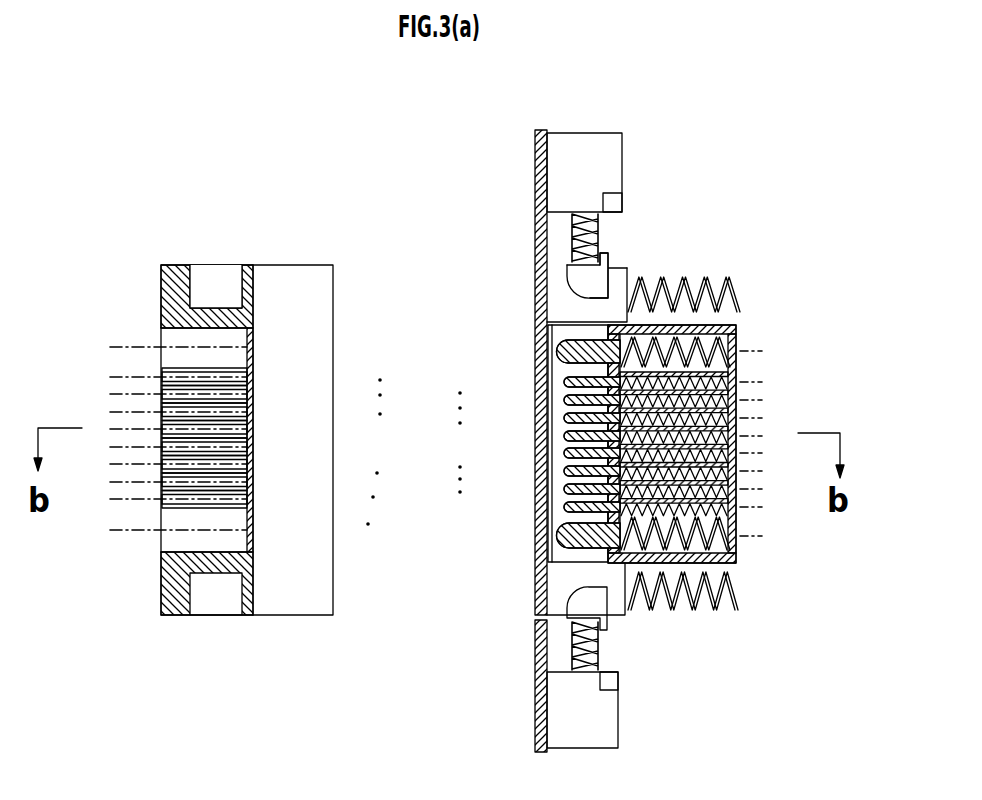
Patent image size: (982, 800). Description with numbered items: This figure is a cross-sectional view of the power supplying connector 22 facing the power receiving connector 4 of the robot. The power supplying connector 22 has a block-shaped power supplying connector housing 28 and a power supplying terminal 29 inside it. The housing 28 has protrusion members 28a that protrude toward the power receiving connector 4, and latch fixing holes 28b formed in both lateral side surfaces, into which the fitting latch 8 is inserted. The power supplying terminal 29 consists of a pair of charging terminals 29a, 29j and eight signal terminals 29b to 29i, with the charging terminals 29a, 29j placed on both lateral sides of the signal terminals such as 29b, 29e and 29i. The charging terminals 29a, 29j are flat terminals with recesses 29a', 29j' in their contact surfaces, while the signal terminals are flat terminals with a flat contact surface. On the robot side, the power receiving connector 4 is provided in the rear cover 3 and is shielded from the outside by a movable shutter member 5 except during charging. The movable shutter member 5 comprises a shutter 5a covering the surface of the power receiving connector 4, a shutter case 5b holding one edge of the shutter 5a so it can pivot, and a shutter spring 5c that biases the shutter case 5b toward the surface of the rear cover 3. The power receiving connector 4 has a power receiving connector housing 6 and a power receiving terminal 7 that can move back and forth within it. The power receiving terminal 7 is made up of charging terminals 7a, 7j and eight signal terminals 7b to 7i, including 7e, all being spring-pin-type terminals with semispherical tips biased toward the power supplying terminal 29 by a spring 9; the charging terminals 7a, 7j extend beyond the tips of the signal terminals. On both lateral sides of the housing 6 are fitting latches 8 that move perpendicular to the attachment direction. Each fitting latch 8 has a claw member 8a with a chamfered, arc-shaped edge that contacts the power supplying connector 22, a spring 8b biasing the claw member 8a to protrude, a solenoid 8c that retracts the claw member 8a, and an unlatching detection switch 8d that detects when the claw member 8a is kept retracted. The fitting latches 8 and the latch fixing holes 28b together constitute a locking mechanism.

The power supplying connector 22 is at (209, 198).
The power supplying connector housing 28 is at (172, 262).
The protrusion members 28a is at (320, 264).
The latch fixing holes 28b is at (215, 272).
The power supplying terminal 29 is at (263, 316).
The charging terminal 29a is at (272, 294).
The recess 29a' is at (340, 316).
The signal terminal 29b is at (257, 377).
The signal terminal 29e is at (257, 430).
The signal terminal 29i is at (257, 500).
The charging terminal 29j is at (243, 606).
The recess 29j' is at (326, 577).
The rear cover 3 is at (536, 151).
The power receiving connector 4 is at (716, 127).
The movable shutter member 5 is at (497, 288).
The shutter 5a is at (536, 322).
The shutter case 5b is at (623, 265).
The shutter spring 5c is at (712, 277).
The power receiving connector housing 6 is at (737, 328).
The power receiving terminal 7 is at (571, 558).
The charging terminal 7a is at (556, 352).
The signal terminal 7b is at (557, 382).
The signal terminal 7e is at (557, 437).
The signal terminal 7i is at (557, 507).
The charging terminal 7j is at (557, 538).
The fitting latch 8 is at (636, 157).
The claw member 8a is at (586, 281).
The spring 8b is at (600, 228).
The solenoid 8c is at (572, 140).
The unlatching detection switch 8d is at (621, 203).
The spring 9 is at (737, 345).